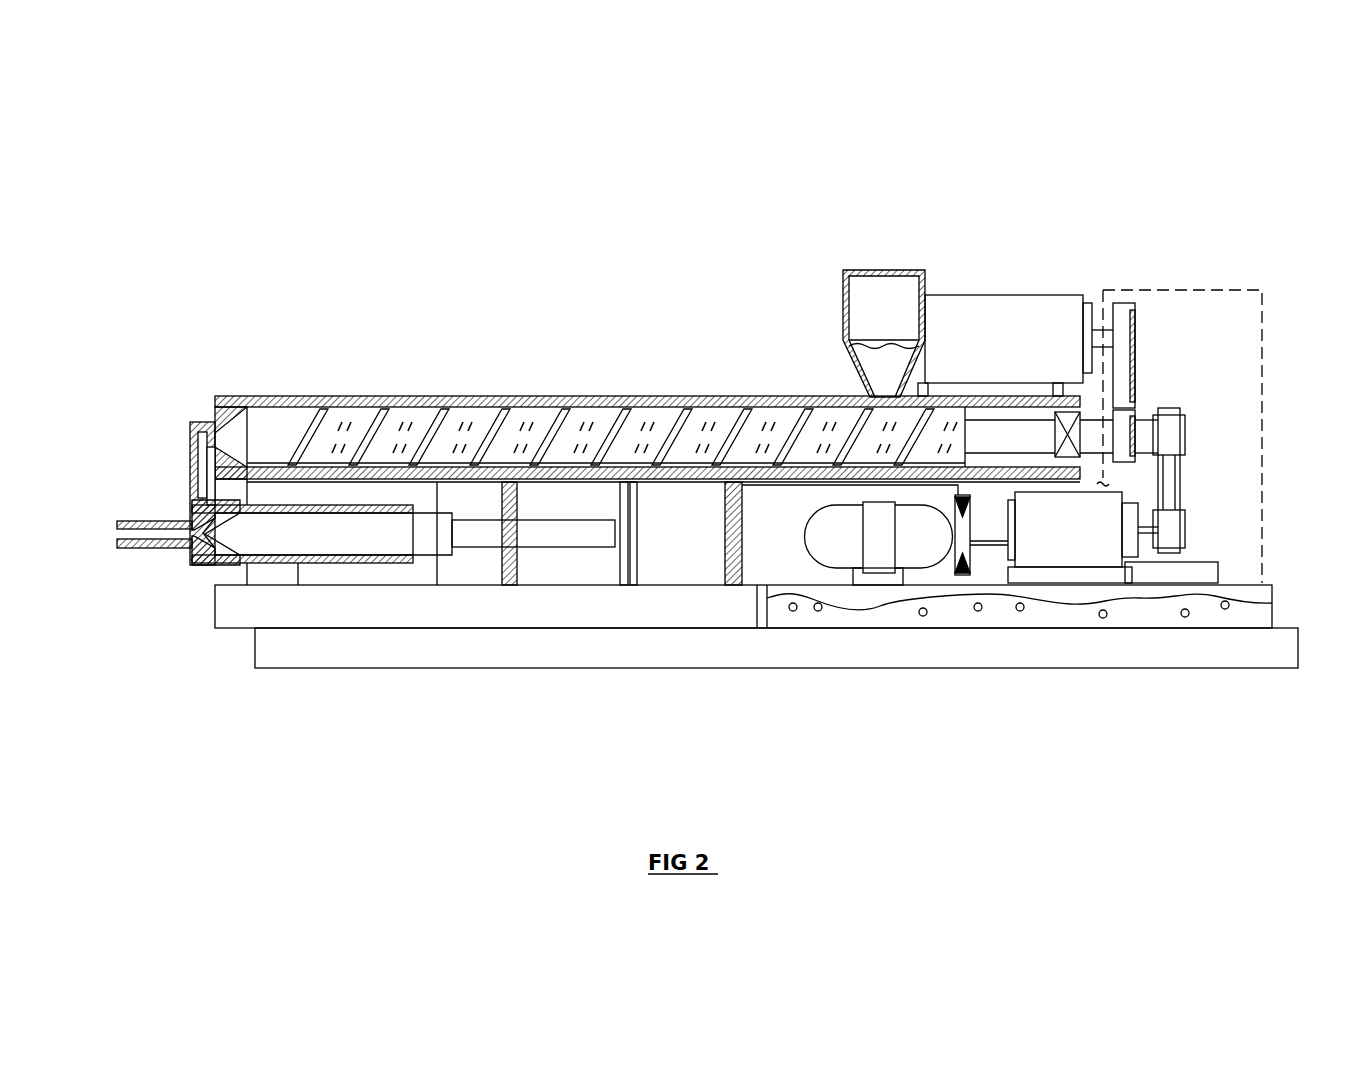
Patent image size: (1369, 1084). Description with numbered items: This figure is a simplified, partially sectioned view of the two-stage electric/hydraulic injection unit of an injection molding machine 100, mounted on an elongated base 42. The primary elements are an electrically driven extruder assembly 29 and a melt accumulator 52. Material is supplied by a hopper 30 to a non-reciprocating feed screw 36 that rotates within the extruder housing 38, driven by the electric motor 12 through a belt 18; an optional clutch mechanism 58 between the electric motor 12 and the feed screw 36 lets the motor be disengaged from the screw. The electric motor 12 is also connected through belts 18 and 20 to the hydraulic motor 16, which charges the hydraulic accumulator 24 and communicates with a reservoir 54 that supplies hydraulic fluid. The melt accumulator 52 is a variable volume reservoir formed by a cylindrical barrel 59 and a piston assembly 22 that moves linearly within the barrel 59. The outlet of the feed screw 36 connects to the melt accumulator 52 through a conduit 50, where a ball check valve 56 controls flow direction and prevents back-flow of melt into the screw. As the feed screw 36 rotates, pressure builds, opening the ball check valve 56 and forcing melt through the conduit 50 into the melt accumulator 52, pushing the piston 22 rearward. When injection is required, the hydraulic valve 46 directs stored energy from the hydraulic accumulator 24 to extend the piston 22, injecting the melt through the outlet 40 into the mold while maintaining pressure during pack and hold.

The injection molding machine 100 is at (537, 160).
The electric motor 12 is at (957, 295).
The hydraulic motor 16 is at (1042, 556).
The belt 18 is at (1135, 408).
The belt 20 is at (1180, 490).
The piston assembly 22 is at (610, 566).
The hydraulic accumulator 24 is at (838, 572).
The extruder assembly 29 is at (648, 350).
The hopper 30 is at (843, 300).
The feed screw 36 is at (477, 396).
The extruder housing 38 is at (282, 396).
The outlet 40 is at (158, 549).
The base 42 is at (365, 672).
The hydraulic valve 46 is at (968, 580).
The conduit 50 is at (203, 420).
The melt accumulator 52 is at (196, 566).
The reservoir 54 is at (1245, 615).
The ball check valve 56 is at (200, 495).
The clutch mechanism 58 is at (1062, 397).
The barrel 59 is at (280, 565).